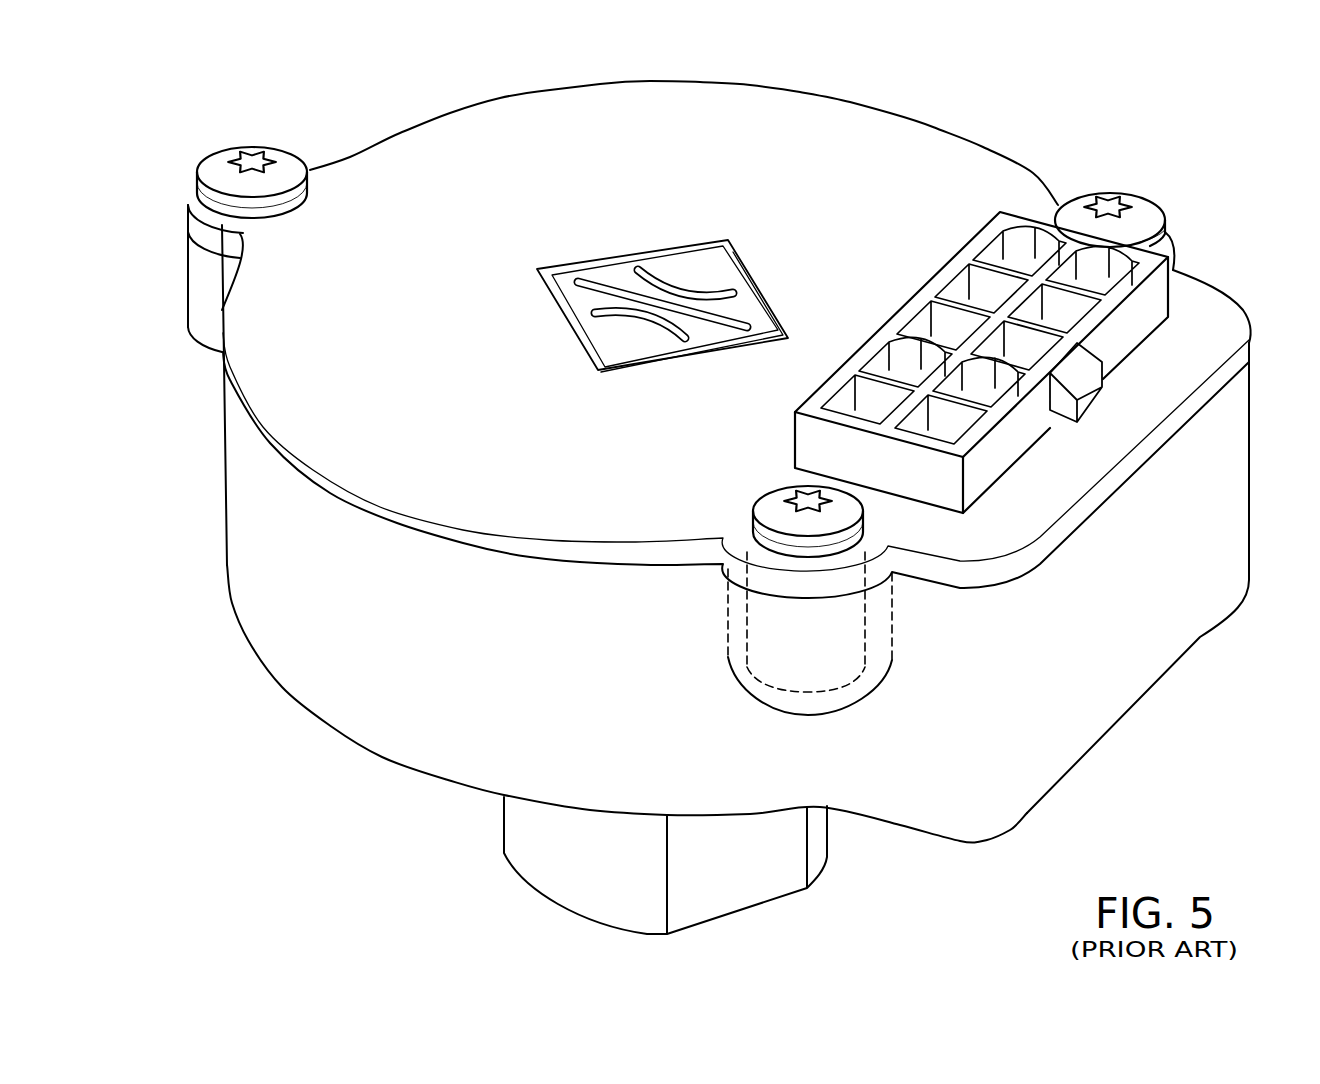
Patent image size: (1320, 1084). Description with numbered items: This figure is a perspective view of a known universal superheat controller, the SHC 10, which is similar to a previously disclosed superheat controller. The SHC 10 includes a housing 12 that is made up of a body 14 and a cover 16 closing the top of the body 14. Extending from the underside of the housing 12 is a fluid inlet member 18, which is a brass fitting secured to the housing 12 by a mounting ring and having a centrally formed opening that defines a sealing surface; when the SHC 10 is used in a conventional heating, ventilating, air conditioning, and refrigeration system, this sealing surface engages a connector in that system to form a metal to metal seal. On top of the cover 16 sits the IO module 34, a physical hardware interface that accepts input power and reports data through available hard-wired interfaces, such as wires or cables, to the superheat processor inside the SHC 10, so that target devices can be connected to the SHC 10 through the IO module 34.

The SHC 10 is at (178, 124).
The housing 12 is at (220, 582).
The body 14 is at (247, 628).
The cover 16 is at (880, 135).
The fluid inlet member 18 is at (510, 848).
The IO module 34 is at (1160, 277).